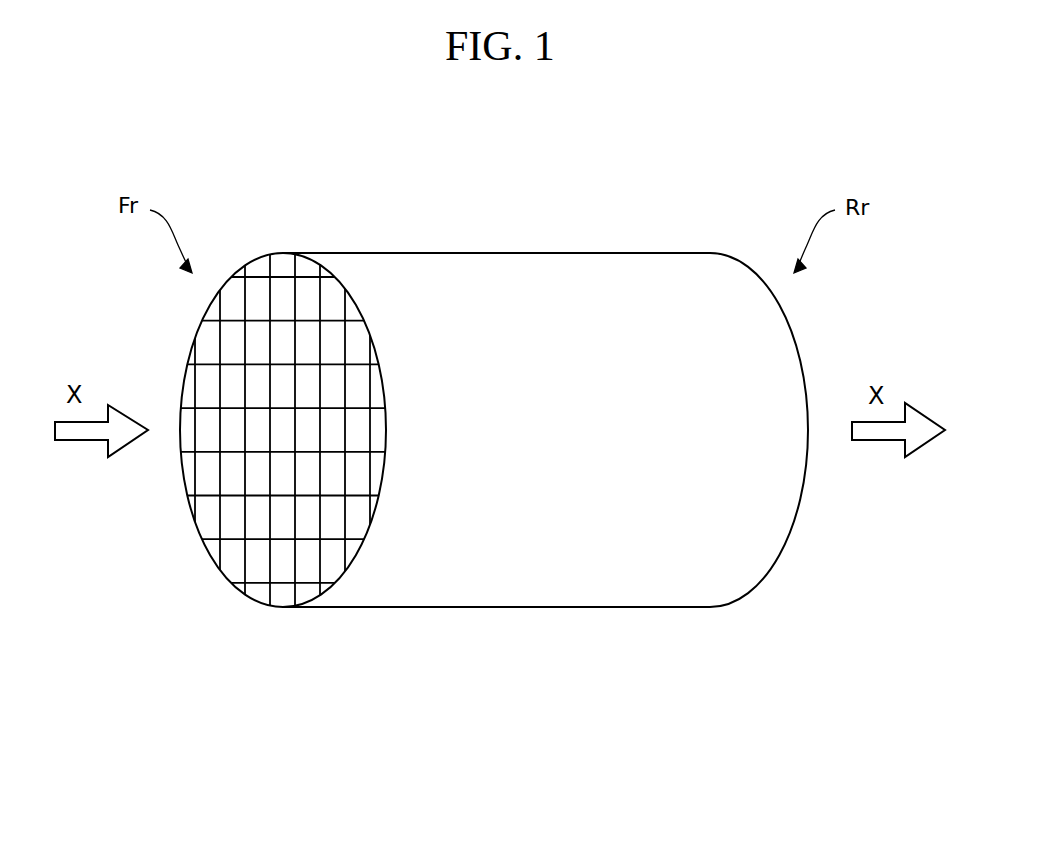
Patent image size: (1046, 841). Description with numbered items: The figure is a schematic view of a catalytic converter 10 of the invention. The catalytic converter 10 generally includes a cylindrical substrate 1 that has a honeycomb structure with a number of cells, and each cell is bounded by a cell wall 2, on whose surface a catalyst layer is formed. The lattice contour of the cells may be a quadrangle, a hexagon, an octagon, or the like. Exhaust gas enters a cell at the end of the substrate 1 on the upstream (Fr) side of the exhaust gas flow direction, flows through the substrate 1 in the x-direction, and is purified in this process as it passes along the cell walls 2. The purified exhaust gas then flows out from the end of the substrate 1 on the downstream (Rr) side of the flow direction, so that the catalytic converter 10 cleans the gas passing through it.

The substrate 1 is at (535, 271).
The cell wall 2 is at (245, 557).
The catalytic converter 10 is at (475, 473).